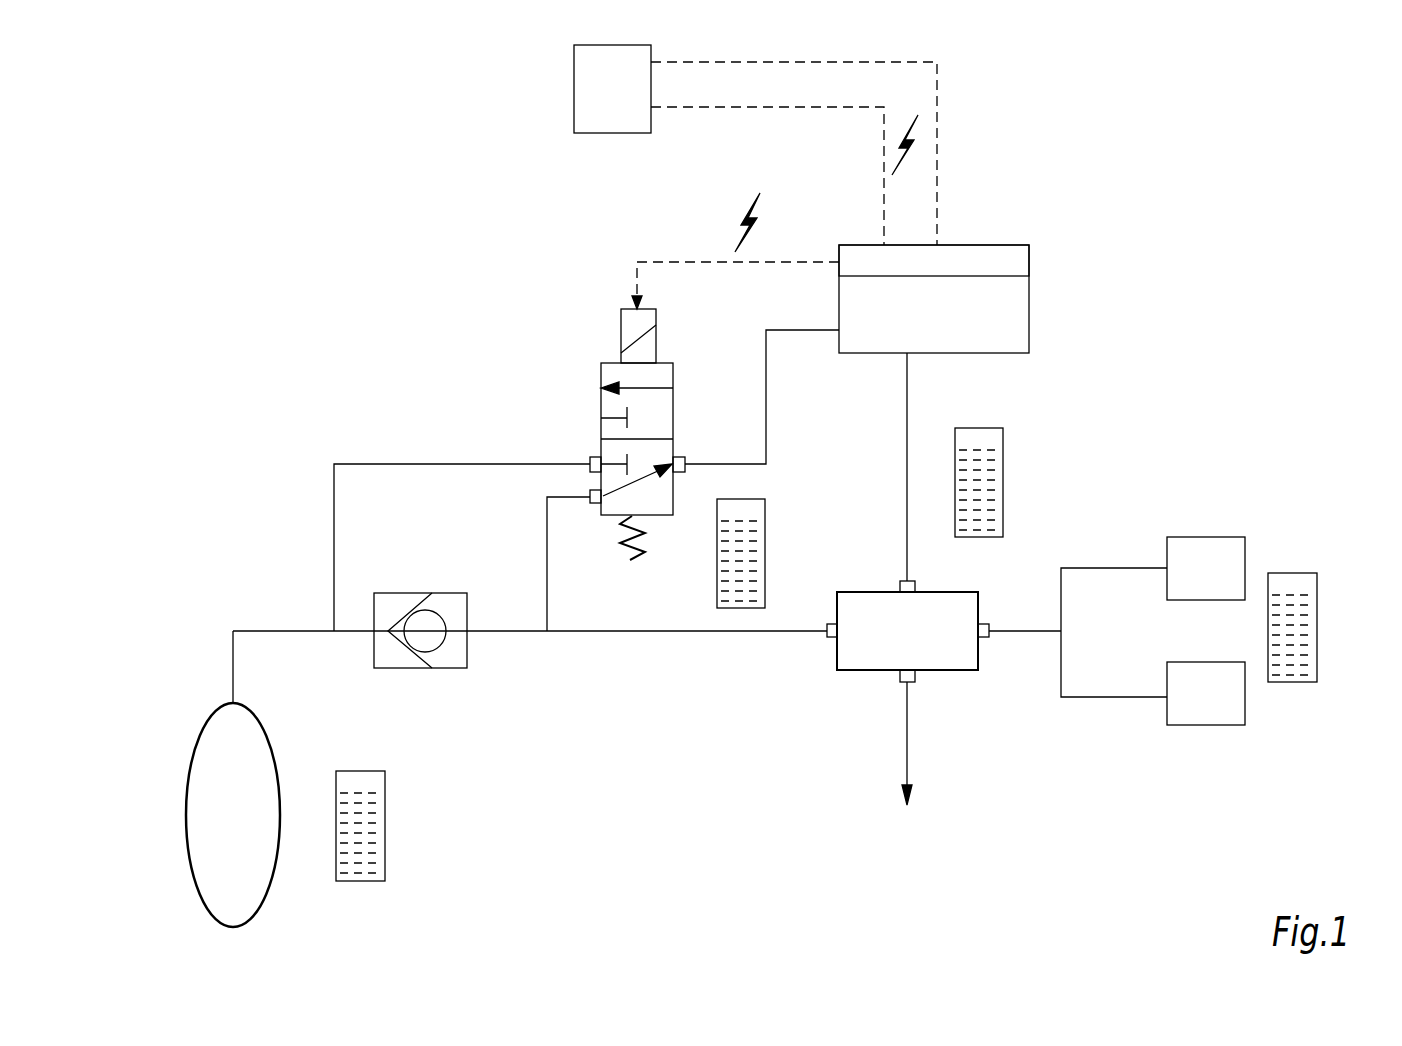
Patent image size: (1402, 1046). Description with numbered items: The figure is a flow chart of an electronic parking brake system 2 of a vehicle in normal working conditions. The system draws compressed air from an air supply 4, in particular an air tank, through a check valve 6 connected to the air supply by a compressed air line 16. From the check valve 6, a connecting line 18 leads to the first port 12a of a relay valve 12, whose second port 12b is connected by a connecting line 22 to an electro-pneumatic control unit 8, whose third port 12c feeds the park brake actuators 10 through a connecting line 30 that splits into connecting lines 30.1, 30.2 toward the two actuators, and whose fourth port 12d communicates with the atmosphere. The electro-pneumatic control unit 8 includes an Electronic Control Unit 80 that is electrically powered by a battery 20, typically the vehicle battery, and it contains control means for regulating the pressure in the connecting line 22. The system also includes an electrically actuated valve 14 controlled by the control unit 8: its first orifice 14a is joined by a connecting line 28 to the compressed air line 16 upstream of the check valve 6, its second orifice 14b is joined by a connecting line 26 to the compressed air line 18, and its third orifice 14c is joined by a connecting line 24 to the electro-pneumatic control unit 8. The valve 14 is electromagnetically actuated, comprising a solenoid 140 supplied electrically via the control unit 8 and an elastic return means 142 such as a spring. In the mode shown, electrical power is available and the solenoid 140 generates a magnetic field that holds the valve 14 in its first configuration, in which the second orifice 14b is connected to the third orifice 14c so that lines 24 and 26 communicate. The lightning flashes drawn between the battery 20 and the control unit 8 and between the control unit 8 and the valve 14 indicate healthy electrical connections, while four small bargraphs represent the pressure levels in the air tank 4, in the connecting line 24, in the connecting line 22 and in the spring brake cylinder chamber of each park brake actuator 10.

The electronic parking brake system 2 is at (332, 258).
The air supply 4 is at (233, 815).
The check valve 6 is at (447, 668).
The electro-pneumatic control unit 8 is at (934, 299).
The Electronic Control Unit 80 is at (934, 260).
The park brake actuator 10 is at (1206, 631).
The relay valve 12 is at (907, 631).
The first port 12a is at (830, 638).
The second port 12b is at (900, 588).
The third port 12c is at (983, 640).
The fourth port 12d is at (898, 676).
The electrically actuated valve 14 is at (585, 423).
The first orifice 14a is at (594, 457).
The second orifice 14b is at (597, 503).
The third orifice 14c is at (682, 457).
The solenoid 140 is at (620, 323).
The elastic return means 142 is at (650, 535).
The compressed air line 16 is at (259, 631).
The connecting line 18 is at (628, 632).
The battery 20 is at (612, 89).
The connecting line 22 is at (907, 400).
The connecting line 24 is at (766, 416).
The connecting line 26 is at (547, 562).
The connecting line 28 is at (405, 464).
The connecting line 30 is at (1028, 631).
The connecting line 30.1 is at (1083, 568).
The connecting line 30.2 is at (1077, 697).